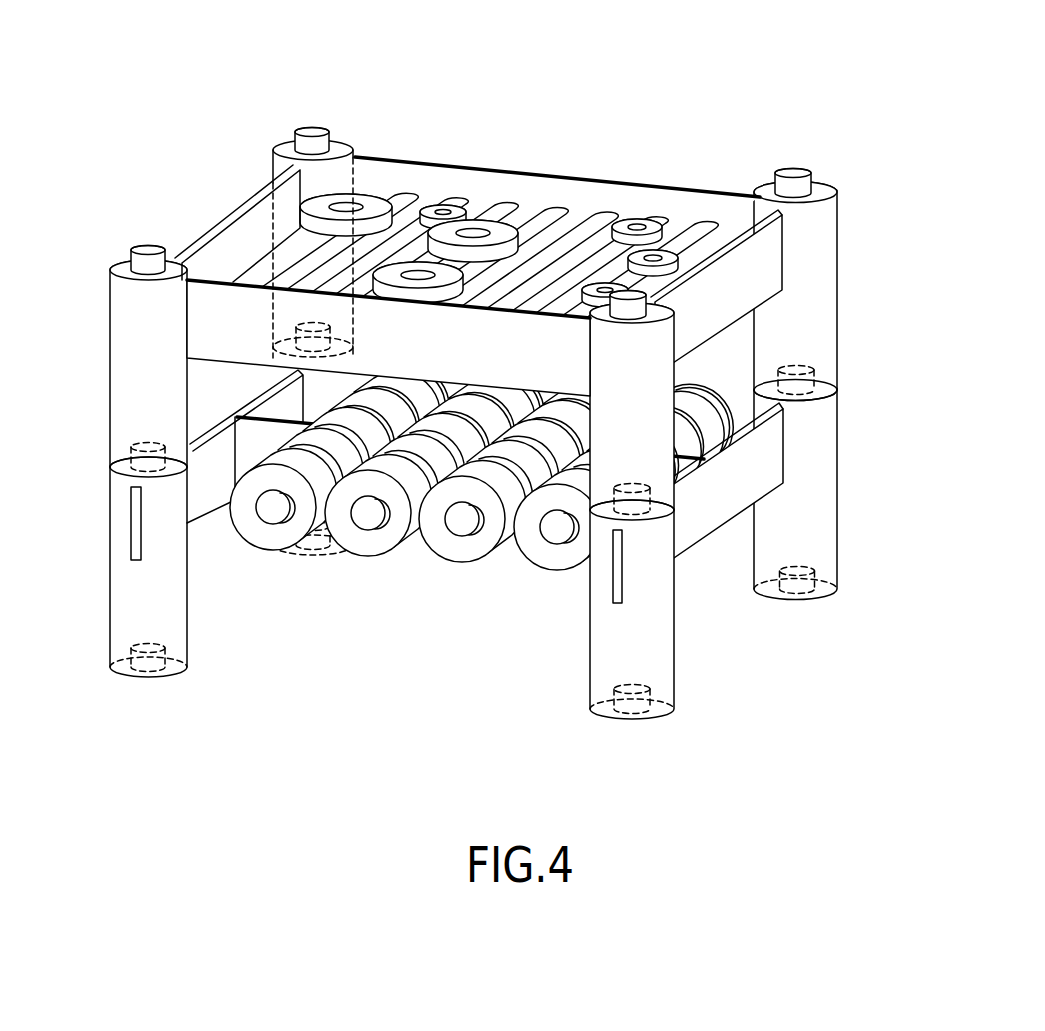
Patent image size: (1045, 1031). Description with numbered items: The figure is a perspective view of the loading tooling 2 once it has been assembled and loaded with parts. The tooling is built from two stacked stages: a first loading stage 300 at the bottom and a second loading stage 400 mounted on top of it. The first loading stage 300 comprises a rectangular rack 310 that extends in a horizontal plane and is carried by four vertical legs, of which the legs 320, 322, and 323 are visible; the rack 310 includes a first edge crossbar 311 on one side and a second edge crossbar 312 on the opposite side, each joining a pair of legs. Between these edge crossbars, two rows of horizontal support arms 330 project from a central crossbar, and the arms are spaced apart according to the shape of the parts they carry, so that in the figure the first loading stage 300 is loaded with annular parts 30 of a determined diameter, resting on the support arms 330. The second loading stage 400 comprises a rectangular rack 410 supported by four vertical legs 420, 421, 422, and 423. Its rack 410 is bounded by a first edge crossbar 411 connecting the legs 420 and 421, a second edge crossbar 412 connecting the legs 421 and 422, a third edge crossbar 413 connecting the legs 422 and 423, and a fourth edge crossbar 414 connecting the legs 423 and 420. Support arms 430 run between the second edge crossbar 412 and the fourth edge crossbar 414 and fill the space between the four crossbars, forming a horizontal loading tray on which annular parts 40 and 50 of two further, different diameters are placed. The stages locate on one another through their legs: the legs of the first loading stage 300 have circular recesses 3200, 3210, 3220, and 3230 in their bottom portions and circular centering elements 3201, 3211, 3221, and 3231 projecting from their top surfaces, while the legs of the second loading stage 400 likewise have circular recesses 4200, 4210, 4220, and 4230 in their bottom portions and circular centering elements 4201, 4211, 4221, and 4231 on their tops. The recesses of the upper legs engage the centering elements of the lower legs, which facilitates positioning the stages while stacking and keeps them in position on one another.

The loading tooling 2 is at (475, 392).
The annular parts 30 is at (481, 479).
The support arms 330 is at (556, 532).
The annular parts 40 is at (370, 185).
The annular parts 50 is at (668, 250).
The first loading stage 300 is at (532, 501).
The rack 310 is at (365, 446).
The first edge crossbar 311 is at (253, 403).
The second edge crossbar 312 is at (710, 523).
The leg 320 is at (102, 569).
The leg 322 is at (825, 509).
The leg 323 is at (638, 607).
The circular recess 3200 is at (152, 662).
The circular centering element 3201 is at (91, 445).
The circular recess 3210 is at (324, 545).
The circular centering element 3211 is at (376, 340).
The circular recess 3220 is at (799, 596).
The circular centering element 3221 is at (855, 367).
The circular recess 3230 is at (632, 713).
The circular centering element 3231 is at (592, 482).
The second loading stage 400 is at (541, 240).
The rack 410 is at (455, 220).
The first edge crossbar 411 is at (232, 212).
The second edge crossbar 412 is at (402, 165).
The third edge crossbar 413 is at (765, 295).
The fourth edge crossbar 414 is at (560, 362).
The leg 420 is at (114, 343).
The leg 421 is at (282, 225).
The leg 422 is at (843, 261).
The leg 423 is at (660, 406).
The circular recess 4200 is at (146, 446).
The circular centering element 4201 is at (143, 252).
The circular recess 4210 is at (355, 347).
The circular centering element 4211 is at (308, 134).
The circular recess 4220 is at (802, 367).
The circular centering element 4221 is at (790, 176).
The circular recess 4230 is at (620, 489).
The circular centering element 4231 is at (662, 305).
The support arms 430 is at (592, 219).